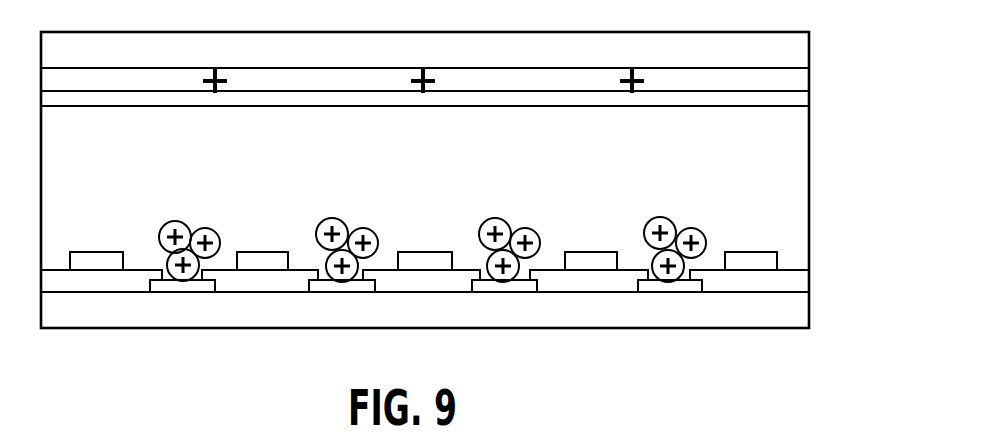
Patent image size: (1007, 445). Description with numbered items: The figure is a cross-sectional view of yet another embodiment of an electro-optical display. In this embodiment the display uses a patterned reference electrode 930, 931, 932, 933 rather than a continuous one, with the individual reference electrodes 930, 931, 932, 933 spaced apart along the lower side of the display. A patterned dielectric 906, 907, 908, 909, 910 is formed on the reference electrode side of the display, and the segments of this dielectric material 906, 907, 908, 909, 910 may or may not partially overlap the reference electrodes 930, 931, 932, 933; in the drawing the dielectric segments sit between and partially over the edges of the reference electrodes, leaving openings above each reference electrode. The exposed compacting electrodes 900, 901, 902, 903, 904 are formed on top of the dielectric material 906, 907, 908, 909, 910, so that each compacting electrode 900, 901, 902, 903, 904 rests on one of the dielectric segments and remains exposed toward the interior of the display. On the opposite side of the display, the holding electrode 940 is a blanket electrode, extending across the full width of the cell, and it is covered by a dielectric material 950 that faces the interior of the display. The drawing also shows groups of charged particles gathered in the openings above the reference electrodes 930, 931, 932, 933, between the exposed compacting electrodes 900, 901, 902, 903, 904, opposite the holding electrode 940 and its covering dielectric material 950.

The exposed compacting electrode 900 is at (92, 252).
The exposed compacting electrode 901 is at (257, 252).
The exposed compacting electrode 902 is at (423, 252).
The exposed compacting electrode 903 is at (587, 252).
The exposed compacting electrode 904 is at (747, 252).
The patterned dielectric 906 is at (712, 273).
The patterned dielectric 907 is at (548, 273).
The patterned dielectric 908 is at (385, 273).
The patterned dielectric 909 is at (225, 273).
The patterned dielectric 910 is at (140, 278).
The patterned reference electrode 930 is at (685, 290).
The patterned reference electrode 931 is at (513, 290).
The patterned reference electrode 932 is at (320, 290).
The patterned reference electrode 933 is at (158, 288).
The holding electrode 940 is at (800, 79).
The dielectric material 950 is at (797, 98).